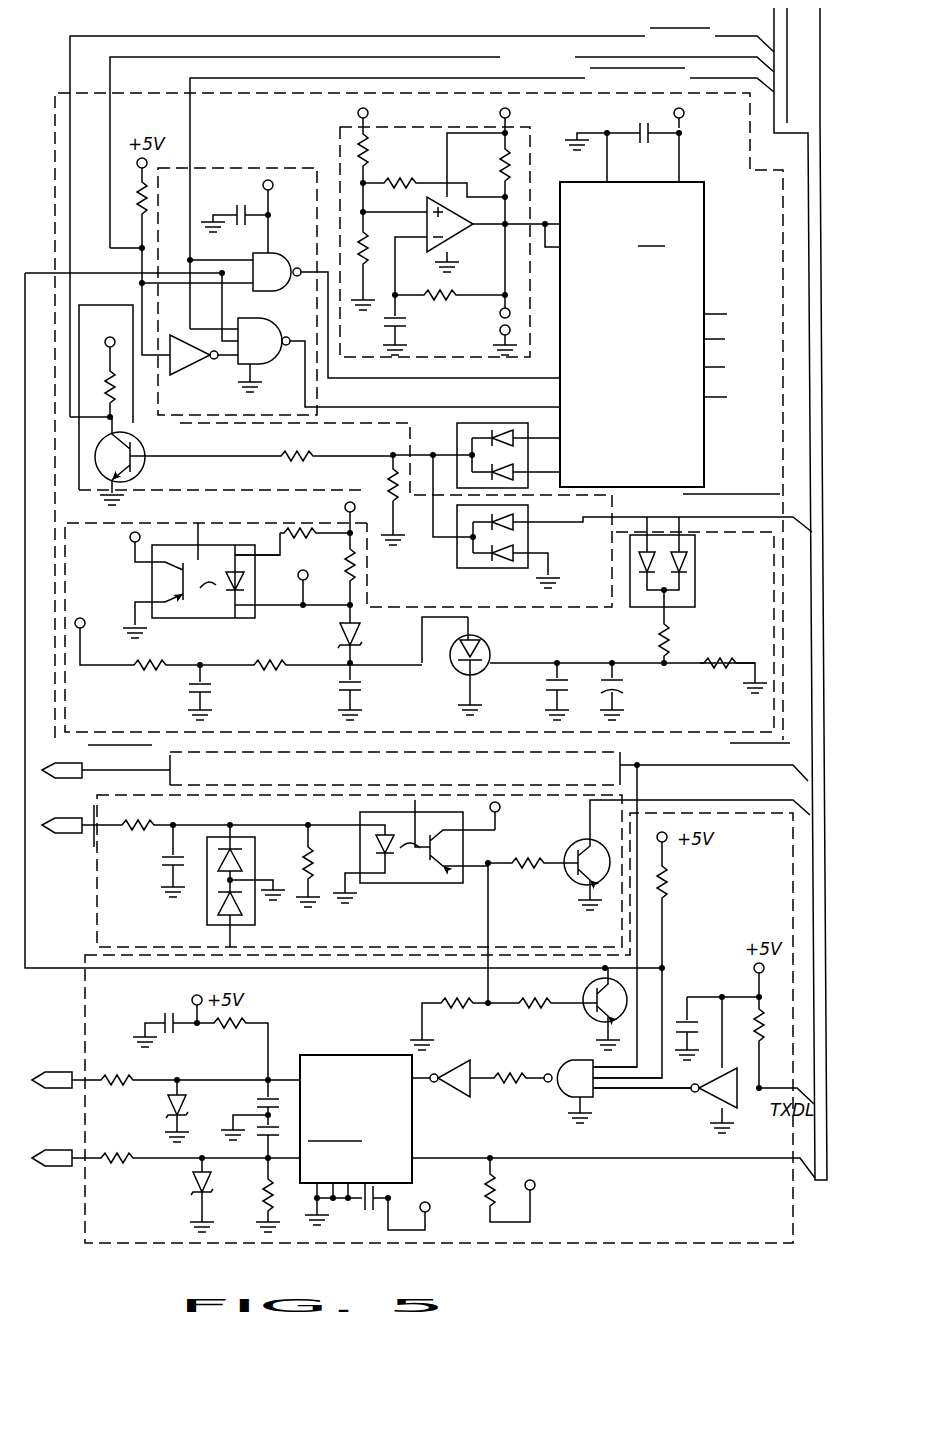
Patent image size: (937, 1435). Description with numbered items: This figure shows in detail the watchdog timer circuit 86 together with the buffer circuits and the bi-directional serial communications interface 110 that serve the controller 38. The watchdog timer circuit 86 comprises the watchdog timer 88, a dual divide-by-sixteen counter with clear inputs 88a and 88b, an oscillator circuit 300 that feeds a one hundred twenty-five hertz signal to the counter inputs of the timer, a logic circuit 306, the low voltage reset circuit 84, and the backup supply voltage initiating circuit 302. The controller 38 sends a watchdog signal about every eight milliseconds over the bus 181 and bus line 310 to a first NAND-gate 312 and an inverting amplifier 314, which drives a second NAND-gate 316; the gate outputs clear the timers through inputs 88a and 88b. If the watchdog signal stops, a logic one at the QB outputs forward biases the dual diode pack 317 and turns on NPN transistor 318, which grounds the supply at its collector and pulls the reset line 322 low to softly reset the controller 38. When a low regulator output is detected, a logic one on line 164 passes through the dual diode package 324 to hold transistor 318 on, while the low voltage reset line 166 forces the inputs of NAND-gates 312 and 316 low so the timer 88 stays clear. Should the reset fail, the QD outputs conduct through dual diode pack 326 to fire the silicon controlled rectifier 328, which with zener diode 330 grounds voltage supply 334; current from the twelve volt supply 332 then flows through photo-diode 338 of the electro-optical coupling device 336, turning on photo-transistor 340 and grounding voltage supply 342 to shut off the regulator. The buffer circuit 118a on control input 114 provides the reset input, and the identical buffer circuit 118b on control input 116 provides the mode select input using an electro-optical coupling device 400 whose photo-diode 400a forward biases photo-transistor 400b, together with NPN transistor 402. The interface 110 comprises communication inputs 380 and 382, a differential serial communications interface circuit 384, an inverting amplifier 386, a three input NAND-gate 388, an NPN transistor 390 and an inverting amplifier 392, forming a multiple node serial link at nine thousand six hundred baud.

The reset line 322 is at (96, 36).
The watchdog timer circuit 86 is at (55, 110).
The bus line 310 is at (178, 57).
The low voltage reset circuit line 166 is at (188, 112).
The logic circuit 306 is at (258, 166).
The oscillator circuit 300 is at (340, 140).
The first NAND-gate 312 is at (268, 258).
The second NAND-gate 316 is at (266, 330).
The inverting amplifier 314 is at (182, 368).
The NPN transistor 318 is at (150, 451).
The watchdog timer 88 is at (560, 487).
The clear input 88a is at (560, 378).
The clear input 88b is at (563, 438).
The bus 181 is at (798, 130).
The controller 38 is at (754, 359).
The dual diode pack 317 is at (458, 442).
The +12 volt supply voltage 332 is at (350, 503).
The voltage supply 342 is at (137, 533).
The backup supply voltage initiating circuit 302 is at (228, 520).
The voltage supply 334 is at (333, 566).
The photo-transistor 340 is at (163, 583).
The electro-optical coupling device 336 is at (158, 618).
The photo-diode 338 is at (239, 602).
The zener diode 330 is at (340, 639).
The low voltage reset circuit 84 is at (377, 568).
The dual diode package 324 is at (460, 570).
The line 164 is at (707, 524).
The dual diode pack 326 is at (700, 593).
The silicon controlled rectifier 328 is at (445, 661).
The buffer circuit 118a is at (623, 748).
The control input 114 is at (72, 777).
The control input 116 is at (70, 820).
The buffer circuit 118b is at (97, 915).
The electro-optical coupling device 400 is at (444, 869).
The photo-diode 400a is at (386, 860).
The photo-transistor 400b is at (445, 836).
The NPN transistor 402 is at (568, 885).
The NPN transistor 390 is at (583, 1021).
The RS-485 communications interface circuit 384 is at (330, 1058).
The inverting amplifier 386 is at (455, 1094).
The three input NAND-gate 388 is at (563, 1095).
The inverting amplifier 392 is at (702, 1100).
The bi-directional communication input 382 is at (52, 1088).
The bi-directional communication input 380 is at (52, 1166).
The bi-directional serial communications interface 110 is at (690, 1243).